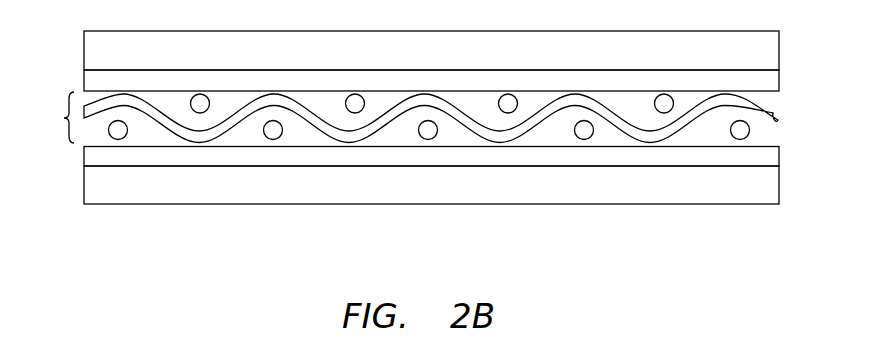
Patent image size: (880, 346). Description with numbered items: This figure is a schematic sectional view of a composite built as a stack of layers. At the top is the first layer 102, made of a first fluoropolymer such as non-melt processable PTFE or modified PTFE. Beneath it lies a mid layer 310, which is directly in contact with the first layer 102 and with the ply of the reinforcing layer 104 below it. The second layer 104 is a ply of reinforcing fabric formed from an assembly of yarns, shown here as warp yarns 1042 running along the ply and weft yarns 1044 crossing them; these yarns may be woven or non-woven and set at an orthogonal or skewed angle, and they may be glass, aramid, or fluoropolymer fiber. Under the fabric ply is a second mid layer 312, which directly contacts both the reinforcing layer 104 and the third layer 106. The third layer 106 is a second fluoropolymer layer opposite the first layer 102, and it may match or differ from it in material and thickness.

The first layer 102 is at (779, 43).
The mid layer 310 is at (779, 82).
The second layer 104 is at (48, 117).
The warp yarns 1042 is at (781, 114).
The weft yarns 1044 is at (750, 130).
The mid layer 312 is at (779, 155).
The third layer 106 is at (779, 190).